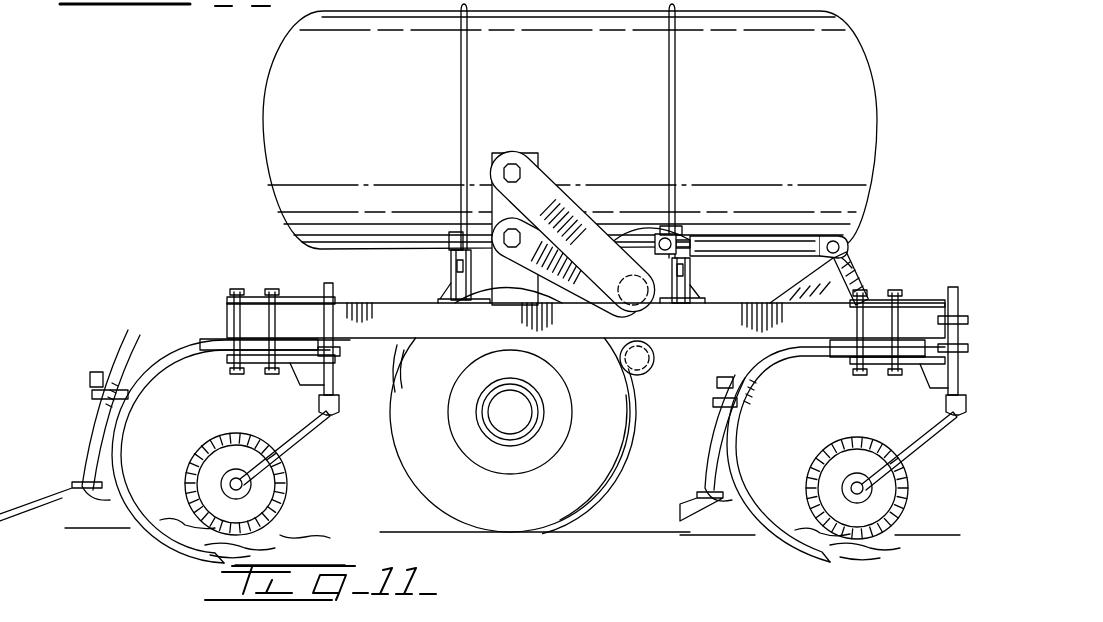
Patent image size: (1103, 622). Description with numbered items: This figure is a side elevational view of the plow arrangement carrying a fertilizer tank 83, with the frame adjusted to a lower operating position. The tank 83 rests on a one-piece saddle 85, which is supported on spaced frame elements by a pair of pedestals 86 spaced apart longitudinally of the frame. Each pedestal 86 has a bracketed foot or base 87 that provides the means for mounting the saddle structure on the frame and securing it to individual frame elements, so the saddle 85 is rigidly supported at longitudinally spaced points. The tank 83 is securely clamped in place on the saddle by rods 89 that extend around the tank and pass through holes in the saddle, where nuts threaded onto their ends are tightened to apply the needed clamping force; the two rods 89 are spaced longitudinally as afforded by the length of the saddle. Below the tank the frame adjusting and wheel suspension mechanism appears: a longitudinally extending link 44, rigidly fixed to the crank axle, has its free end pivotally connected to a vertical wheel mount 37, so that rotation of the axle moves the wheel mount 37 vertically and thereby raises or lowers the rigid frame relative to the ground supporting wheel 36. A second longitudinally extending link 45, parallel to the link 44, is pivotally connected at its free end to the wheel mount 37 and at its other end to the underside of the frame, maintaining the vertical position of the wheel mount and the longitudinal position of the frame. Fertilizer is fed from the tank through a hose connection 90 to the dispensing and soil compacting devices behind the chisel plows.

The fertilizer tank 83 is at (264, 110).
The rods 89 is at (460, 100).
The wheel mount 37 is at (494, 202).
The longitudinally extending link 44 is at (553, 192).
The longitudinally extending link 45 is at (528, 258).
The saddle 85 is at (455, 240).
The pedestal 86 is at (462, 288).
The bracketed foot or base 87 is at (445, 301).
The ground supporting wheel 36 is at (627, 426).
The hose connection 90 is at (130, 348).